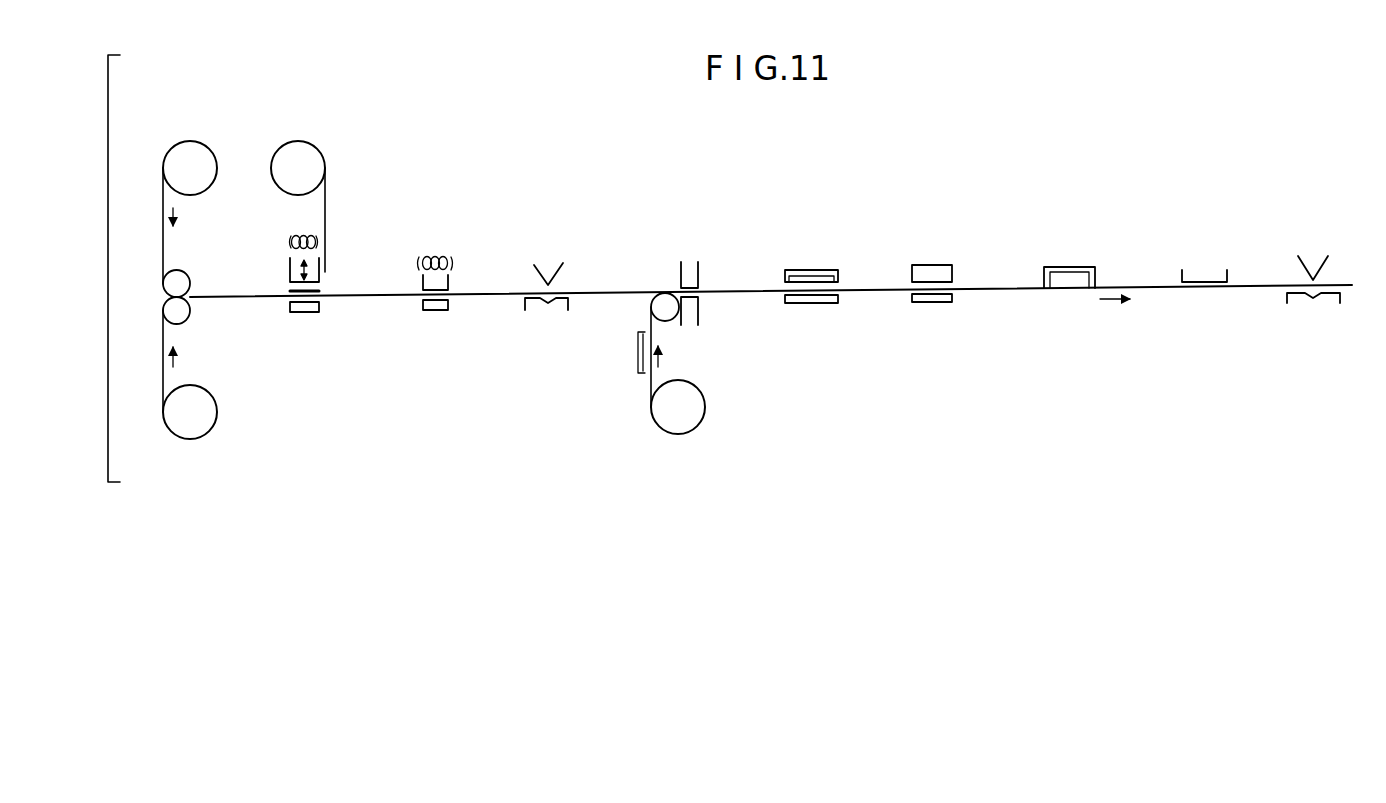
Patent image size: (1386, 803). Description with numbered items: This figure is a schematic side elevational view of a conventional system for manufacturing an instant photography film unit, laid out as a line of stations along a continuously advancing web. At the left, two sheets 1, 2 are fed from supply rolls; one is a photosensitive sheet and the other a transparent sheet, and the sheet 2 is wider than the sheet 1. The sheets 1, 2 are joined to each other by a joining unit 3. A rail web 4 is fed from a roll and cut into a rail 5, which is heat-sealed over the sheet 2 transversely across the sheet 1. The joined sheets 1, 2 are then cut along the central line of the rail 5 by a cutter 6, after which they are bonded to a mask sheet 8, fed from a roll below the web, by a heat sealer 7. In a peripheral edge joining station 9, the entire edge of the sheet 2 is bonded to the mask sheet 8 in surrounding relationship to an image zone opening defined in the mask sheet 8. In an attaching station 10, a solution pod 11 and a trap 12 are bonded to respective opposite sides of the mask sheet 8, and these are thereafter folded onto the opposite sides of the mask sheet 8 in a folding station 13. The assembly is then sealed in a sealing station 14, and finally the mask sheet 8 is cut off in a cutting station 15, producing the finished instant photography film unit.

The sheet 1 is at (164, 253).
The sheet 2 is at (164, 381).
The joining unit 3 is at (150, 293).
The rail web 4 is at (325, 223).
The rail 5 is at (290, 291).
The cutter 6 is at (562, 251).
The heat sealer 7 is at (697, 252).
The mask sheet 8 is at (651, 390).
The peripheral edge joining station 9 is at (816, 250).
The attaching station 10 is at (935, 278).
The solution pod 11 is at (928, 268).
The trap 12 is at (930, 303).
The folding station 13 is at (1087, 250).
The sealing station 14 is at (1210, 250).
The cutting station 15 is at (1318, 250).